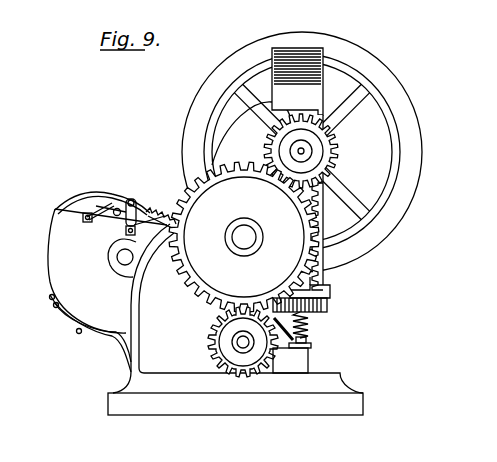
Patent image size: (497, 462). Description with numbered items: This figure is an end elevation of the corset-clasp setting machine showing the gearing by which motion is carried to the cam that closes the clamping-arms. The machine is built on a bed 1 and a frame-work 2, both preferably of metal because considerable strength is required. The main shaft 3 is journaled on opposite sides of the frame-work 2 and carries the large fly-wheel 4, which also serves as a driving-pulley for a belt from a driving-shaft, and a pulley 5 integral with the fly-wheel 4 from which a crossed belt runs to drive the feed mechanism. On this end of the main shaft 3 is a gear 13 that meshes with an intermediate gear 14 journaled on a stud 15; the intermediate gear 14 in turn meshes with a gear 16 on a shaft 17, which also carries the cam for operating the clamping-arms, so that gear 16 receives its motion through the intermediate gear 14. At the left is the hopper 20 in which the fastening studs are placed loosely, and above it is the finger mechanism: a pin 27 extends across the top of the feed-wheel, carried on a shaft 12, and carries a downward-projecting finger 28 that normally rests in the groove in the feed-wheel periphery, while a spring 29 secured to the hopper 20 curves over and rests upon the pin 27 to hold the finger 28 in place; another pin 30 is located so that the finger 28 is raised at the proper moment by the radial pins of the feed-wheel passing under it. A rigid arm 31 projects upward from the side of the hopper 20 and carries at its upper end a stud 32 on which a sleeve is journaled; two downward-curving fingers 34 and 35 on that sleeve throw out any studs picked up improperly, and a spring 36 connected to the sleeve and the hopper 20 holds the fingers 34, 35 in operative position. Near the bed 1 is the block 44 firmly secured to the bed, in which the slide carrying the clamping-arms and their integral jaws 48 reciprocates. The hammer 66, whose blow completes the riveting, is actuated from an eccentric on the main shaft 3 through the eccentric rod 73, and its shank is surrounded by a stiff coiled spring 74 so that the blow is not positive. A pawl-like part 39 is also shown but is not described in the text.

The bed 1 is at (365, 396).
The frame-work 2 is at (301, 173).
The main shaft 3 is at (298, 151).
The fly-wheel 4 is at (400, 151).
The pulley 5 is at (338, 137).
The shaft 12 is at (122, 258).
The gear 13 is at (270, 134).
The intermediate gear 14 is at (244, 237).
The stud 15 is at (244, 237).
The gear 16 is at (222, 345).
The shaft 17 is at (240, 341).
The hopper 20 is at (107, 290).
The pin 27 is at (107, 203).
The finger 28 is at (92, 208).
The spring 29 is at (102, 200).
The pin 30 is at (117, 208).
The rigid arm 31 is at (131, 212).
The stud 32 is at (131, 200).
The finger 34 is at (126, 230).
The finger 35 is at (140, 224).
The spring 36 is at (162, 211).
The pawl 39 is at (283, 325).
The block 44 is at (290, 360).
The jaws 48 is at (310, 346).
The hammer 66 is at (307, 340).
The eccentric rod 73 is at (323, 214).
The coiled spring 74 is at (308, 319).